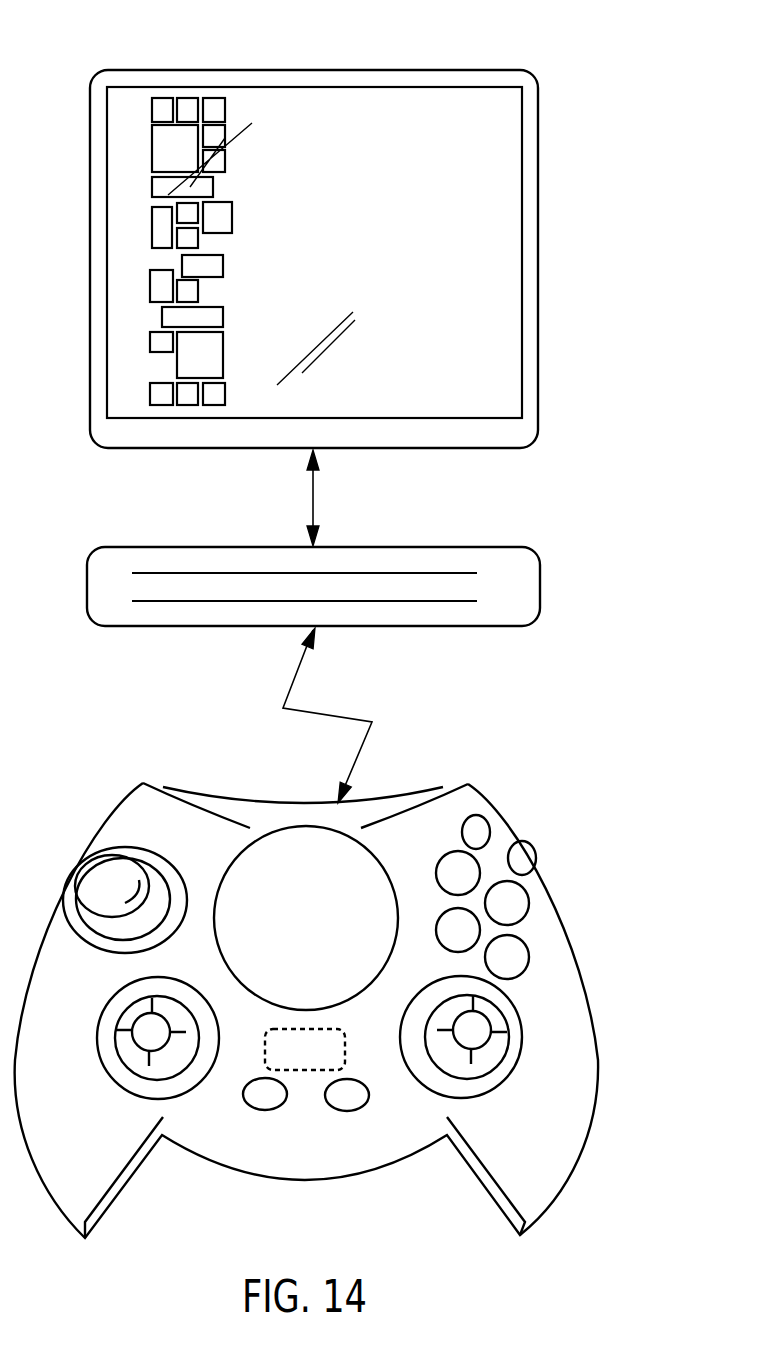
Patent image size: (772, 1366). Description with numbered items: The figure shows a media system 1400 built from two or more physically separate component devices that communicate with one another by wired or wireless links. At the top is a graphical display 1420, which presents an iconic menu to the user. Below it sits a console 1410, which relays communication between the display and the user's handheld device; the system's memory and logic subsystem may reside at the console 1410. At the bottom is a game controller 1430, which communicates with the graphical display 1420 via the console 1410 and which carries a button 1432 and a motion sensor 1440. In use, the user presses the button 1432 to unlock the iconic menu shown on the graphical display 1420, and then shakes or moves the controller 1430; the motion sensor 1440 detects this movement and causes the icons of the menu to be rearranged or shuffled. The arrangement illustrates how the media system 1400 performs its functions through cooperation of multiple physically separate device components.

The media system 1400 is at (562, 36).
The graphical display 1420 is at (539, 229).
The console 1410 is at (540, 586).
The controller 1430 is at (355, 1010).
The button 1432 is at (265, 1094).
The motion sensor 1440 is at (305, 1049).